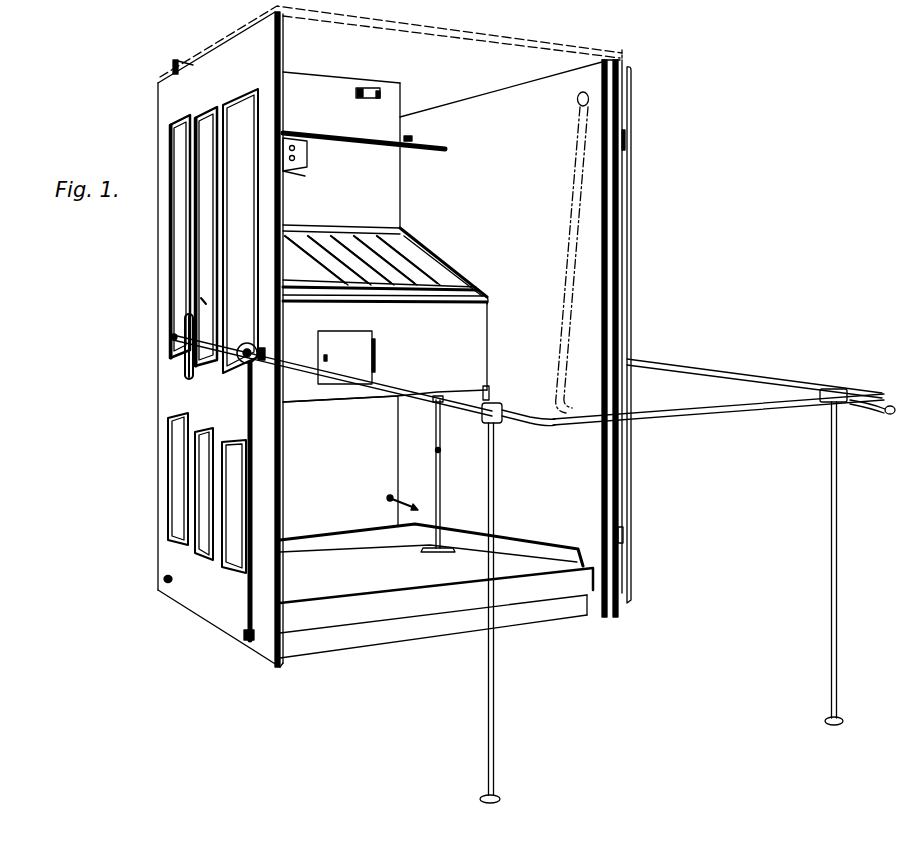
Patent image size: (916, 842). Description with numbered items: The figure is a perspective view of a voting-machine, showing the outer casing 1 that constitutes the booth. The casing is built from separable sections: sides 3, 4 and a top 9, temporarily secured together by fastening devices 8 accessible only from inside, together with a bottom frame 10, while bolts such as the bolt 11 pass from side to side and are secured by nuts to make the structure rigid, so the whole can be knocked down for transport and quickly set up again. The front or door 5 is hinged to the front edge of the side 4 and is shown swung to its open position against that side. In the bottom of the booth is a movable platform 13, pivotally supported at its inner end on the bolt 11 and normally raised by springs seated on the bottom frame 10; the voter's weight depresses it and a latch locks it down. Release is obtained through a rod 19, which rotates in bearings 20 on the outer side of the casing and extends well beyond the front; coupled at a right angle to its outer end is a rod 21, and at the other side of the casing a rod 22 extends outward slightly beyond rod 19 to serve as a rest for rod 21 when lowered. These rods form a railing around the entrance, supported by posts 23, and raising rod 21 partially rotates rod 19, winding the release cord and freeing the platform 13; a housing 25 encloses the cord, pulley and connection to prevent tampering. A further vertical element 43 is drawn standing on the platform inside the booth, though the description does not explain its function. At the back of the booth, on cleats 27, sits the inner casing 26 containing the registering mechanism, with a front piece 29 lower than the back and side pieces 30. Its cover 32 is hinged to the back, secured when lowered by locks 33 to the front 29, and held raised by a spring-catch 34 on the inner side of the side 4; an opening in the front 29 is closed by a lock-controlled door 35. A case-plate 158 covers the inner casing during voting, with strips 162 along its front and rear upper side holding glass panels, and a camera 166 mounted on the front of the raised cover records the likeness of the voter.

The outer casing 1 is at (211, 339).
The side 3 is at (160, 263).
The side 4 is at (537, 84).
The front 5 is at (631, 250).
The fastening devices 8 is at (401, 506).
The top 9 is at (510, 38).
The bottom frame 10 is at (397, 632).
The bolt 11 is at (164, 579).
The movable platform 13 is at (380, 628).
The rod 19 is at (294, 368).
The bearings 20 is at (176, 339).
The rod 21 is at (566, 262).
The rod 22 is at (754, 380).
The posts 23 is at (675, 602).
The housing 25 is at (250, 584).
The casing 26 is at (340, 408).
The cleats 27 is at (487, 395).
The front piece 29 is at (385, 352).
The side pieces 30 is at (445, 269).
The cover 32 is at (315, 82).
The locks 33 is at (374, 79).
The spring-catch 34 is at (408, 138).
The lock-controlled door 35 is at (346, 357).
The vertical pipe 43 is at (444, 474).
The case-plate 158 is at (403, 262).
The strips 162 is at (326, 240).
The camera 166 is at (316, 157).